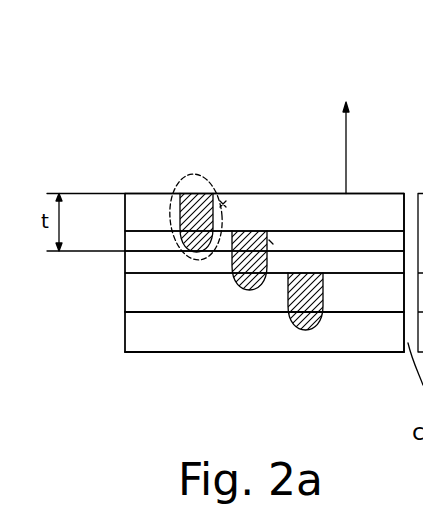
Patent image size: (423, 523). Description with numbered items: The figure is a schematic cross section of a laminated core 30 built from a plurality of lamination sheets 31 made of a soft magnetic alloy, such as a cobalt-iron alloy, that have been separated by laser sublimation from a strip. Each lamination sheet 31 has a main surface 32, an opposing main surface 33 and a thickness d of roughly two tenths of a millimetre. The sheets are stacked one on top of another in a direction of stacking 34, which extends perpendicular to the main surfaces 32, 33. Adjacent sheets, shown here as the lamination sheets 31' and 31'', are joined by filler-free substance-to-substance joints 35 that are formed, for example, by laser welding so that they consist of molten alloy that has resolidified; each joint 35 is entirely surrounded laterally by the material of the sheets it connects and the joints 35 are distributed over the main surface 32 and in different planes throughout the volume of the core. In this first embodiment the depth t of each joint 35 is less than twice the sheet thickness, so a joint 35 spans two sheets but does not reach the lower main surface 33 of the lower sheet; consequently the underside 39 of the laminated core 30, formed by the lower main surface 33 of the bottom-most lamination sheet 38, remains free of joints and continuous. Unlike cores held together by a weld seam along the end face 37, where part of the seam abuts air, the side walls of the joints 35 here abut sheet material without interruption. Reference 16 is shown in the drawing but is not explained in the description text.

The laminated core 30 is at (123, 92).
The lamination sheet 31'' is at (243, 173).
The opposing main surface 33 is at (296, 233).
The lamination sheet 31' is at (217, 267).
The lamination sheet 31 is at (217, 295).
The main surface 32 is at (372, 195).
The end face 37 is at (120, 335).
The bottom-most lamination sheet 38 is at (192, 340).
The underside 39 is at (245, 355).
The direction of stacking 34 is at (350, 132).
The substance-to-substance joint 35 is at (195, 178).
The particle / defect 16 is at (223, 205).